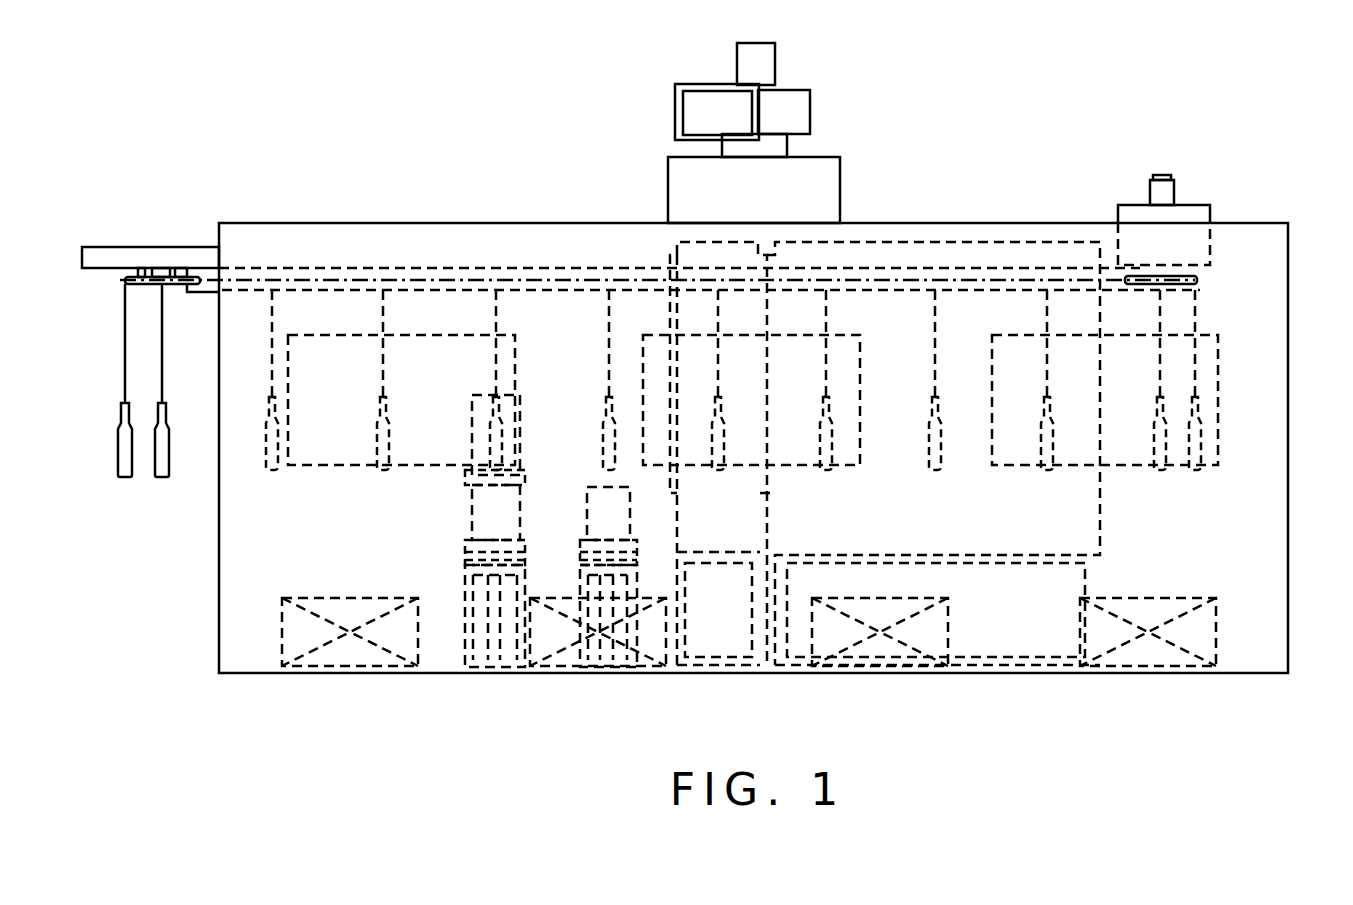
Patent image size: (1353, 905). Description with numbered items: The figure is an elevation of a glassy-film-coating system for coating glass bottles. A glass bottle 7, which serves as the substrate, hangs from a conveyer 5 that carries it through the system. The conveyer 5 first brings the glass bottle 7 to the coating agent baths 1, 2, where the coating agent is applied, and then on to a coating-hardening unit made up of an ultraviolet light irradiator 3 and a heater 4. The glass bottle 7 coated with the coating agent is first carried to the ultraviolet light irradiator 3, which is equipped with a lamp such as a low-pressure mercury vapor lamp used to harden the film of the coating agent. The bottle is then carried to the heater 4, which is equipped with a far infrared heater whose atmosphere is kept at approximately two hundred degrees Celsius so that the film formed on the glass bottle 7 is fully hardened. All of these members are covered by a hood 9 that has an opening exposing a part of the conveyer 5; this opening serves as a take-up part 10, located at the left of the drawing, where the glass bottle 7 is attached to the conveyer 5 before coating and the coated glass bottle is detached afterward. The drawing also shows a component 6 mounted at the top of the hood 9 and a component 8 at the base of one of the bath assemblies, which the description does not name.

The coating agent bath 1 is at (510, 578).
The coating agent bath 2 is at (598, 502).
The ultraviolet light irradiator 3 is at (688, 255).
The heater 4 is at (990, 258).
The conveyer 5 is at (476, 278).
The drive unit 6 is at (1200, 217).
The glass bottle 7 is at (272, 478).
The reagent container 8 is at (477, 675).
The hood 9 is at (1267, 308).
The take-up part 10 is at (115, 290).